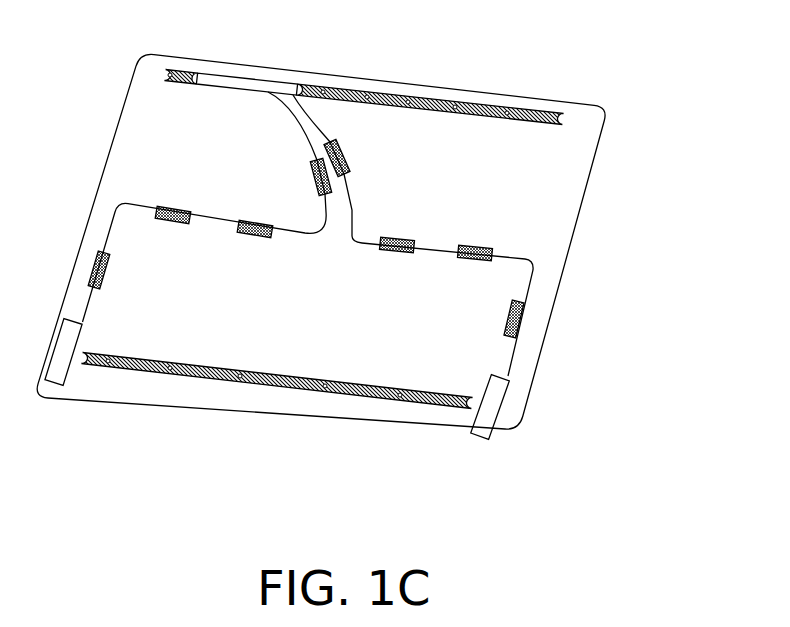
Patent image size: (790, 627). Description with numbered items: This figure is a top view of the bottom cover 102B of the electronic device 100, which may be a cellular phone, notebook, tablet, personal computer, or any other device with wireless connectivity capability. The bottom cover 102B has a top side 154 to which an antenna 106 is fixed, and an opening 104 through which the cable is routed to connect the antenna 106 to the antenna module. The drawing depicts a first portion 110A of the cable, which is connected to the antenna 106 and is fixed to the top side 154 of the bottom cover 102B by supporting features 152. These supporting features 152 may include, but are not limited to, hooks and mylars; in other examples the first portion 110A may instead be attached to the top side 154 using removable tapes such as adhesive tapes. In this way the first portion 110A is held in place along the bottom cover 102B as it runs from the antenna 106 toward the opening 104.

The electronic device 100 is at (507, 497).
The bottom cover 102B is at (540, 337).
The opening 104 is at (238, 77).
The antenna 106 is at (499, 407).
The first portion 110A is at (532, 285).
The supporting features 152 is at (403, 234).
The top side 154 is at (568, 150).